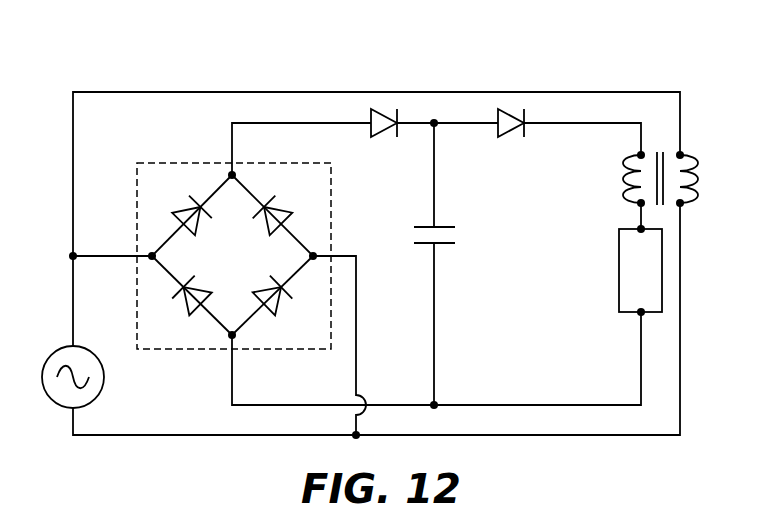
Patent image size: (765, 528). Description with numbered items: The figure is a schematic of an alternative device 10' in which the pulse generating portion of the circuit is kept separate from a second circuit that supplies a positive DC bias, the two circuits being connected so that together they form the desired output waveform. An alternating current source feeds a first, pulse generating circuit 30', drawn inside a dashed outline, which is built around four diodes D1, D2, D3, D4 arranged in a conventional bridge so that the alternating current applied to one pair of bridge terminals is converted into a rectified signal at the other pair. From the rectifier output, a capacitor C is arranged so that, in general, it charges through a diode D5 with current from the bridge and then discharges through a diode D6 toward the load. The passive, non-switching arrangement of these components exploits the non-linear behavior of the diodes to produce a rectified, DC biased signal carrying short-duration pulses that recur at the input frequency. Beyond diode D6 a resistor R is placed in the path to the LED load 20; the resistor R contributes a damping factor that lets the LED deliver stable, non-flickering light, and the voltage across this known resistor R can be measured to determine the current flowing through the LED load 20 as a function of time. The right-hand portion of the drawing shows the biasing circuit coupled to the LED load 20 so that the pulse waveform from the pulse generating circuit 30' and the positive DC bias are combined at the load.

The alternative device 10' is at (370, 242).
The pulse generating circuit 30' is at (231, 286).
The LED load 20 is at (640, 270).
The diode D1 is at (185, 211).
The diode D2 is at (281, 212).
The diode D3 is at (283, 301).
The diode D4 is at (184, 301).
The diode D5 is at (382, 138).
The diode D6 is at (510, 137).
The capacitor C is at (444, 235).
The resistor R is at (649, 178).